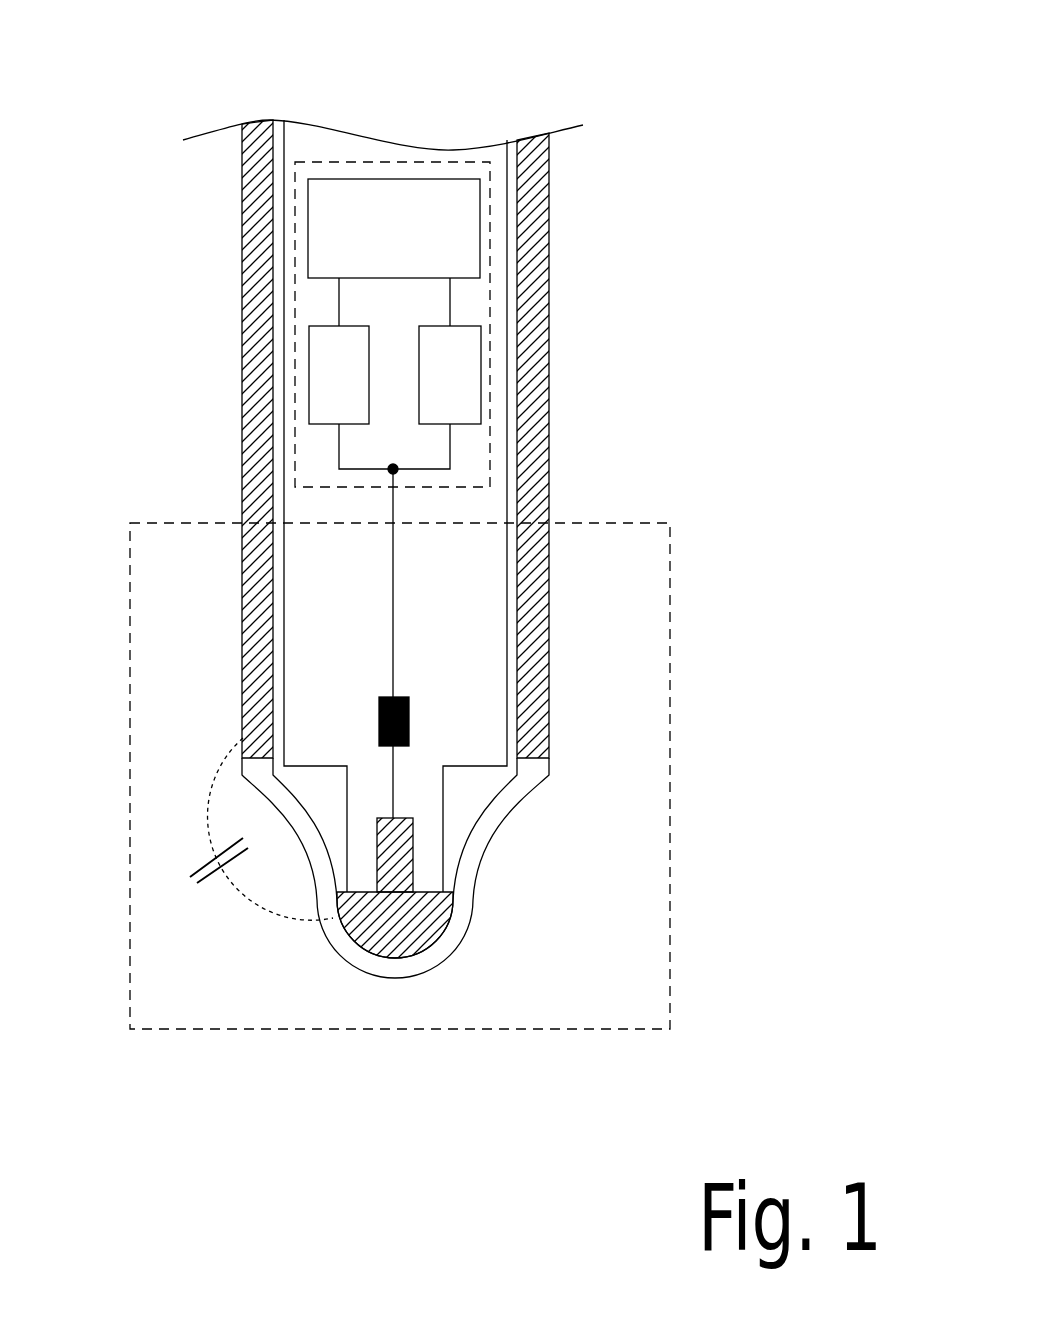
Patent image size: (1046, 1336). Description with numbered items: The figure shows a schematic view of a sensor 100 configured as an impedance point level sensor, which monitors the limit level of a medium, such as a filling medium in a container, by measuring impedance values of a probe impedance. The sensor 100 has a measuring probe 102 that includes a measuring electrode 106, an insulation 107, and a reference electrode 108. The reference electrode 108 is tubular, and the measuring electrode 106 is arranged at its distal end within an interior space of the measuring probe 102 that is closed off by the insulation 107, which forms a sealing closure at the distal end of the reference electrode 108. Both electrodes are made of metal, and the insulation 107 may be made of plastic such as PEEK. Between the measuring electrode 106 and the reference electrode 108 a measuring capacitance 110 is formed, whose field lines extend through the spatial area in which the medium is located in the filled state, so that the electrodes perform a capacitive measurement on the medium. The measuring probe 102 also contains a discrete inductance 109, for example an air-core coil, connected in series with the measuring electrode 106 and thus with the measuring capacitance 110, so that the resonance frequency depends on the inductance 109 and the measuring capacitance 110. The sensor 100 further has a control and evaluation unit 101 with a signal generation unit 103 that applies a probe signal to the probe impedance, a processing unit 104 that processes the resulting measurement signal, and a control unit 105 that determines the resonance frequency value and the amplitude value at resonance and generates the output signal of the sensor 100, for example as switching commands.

The sensor 100 is at (135, 70).
The control and evaluation unit 101 is at (490, 430).
The measuring probe 102 is at (273, 1030).
The signal generation unit 103 is at (450, 375).
The processing unit 104 is at (339, 375).
The control unit 105 is at (394, 228).
The measuring electrode 106 is at (440, 945).
The insulation 107 is at (492, 810).
The reference electrode 108 is at (523, 695).
The inductance 109 is at (408, 730).
The measuring capacitance 110 is at (192, 873).